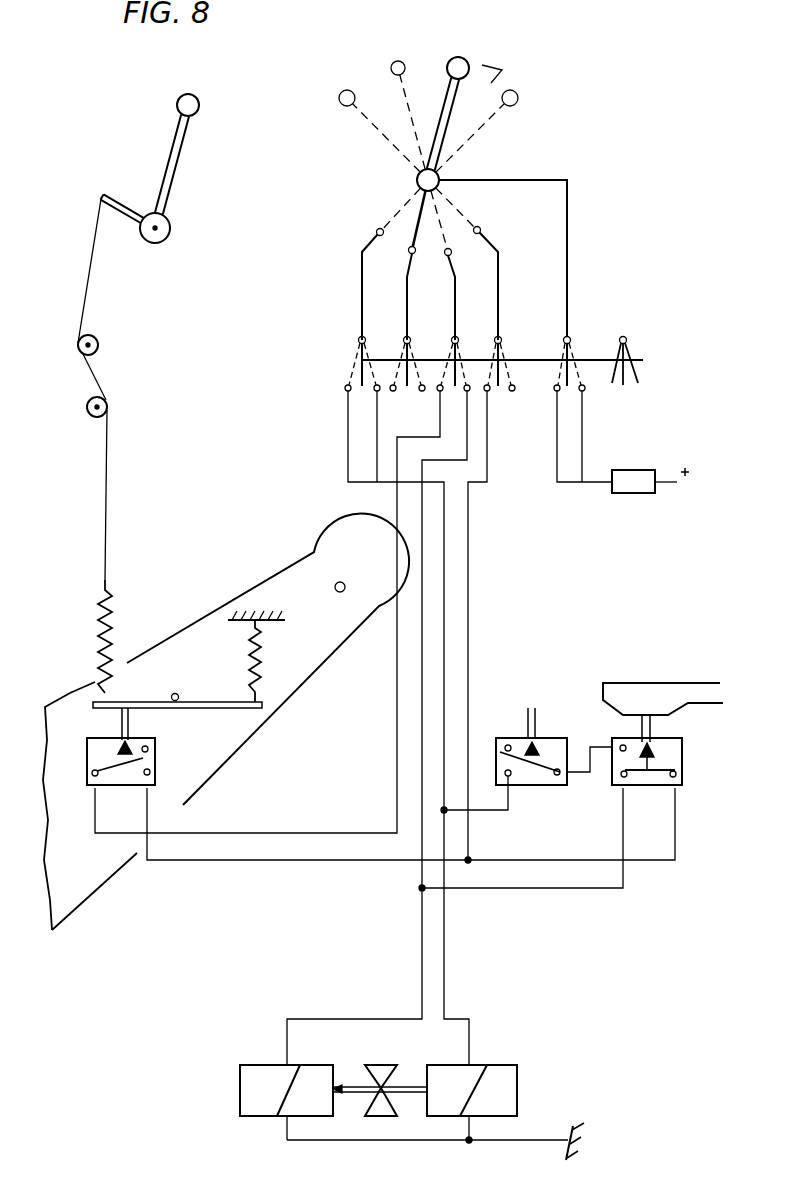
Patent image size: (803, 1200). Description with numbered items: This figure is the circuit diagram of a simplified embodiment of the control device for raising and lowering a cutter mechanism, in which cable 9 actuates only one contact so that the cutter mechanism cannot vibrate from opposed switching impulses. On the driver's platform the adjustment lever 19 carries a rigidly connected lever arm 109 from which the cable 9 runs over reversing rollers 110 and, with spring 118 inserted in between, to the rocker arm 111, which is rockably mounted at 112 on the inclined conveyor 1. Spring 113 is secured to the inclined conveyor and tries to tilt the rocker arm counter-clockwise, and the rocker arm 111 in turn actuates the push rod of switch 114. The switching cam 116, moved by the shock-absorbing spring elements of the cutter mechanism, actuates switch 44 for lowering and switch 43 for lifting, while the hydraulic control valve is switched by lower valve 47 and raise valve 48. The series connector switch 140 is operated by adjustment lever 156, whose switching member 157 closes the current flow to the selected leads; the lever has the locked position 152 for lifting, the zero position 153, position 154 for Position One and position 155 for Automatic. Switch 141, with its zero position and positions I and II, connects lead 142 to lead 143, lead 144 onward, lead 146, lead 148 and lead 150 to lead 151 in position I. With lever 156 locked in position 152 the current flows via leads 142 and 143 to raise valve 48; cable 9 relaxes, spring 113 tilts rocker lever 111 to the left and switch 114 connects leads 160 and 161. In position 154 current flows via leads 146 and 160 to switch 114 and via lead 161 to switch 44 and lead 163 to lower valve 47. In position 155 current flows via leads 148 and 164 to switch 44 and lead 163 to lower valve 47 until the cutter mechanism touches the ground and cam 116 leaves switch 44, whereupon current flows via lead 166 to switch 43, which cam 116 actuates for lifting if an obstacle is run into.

The inclined conveyor 1 is at (290, 583).
The cable 9 is at (92, 295).
The adjustment lever 19 is at (177, 152).
The switch for lifting 43 is at (515, 738).
The switch for lowering 44 is at (682, 748).
The lower valve 47 is at (240, 1075).
The raise valve 48 is at (518, 1082).
The lever arm 109 is at (105, 193).
The reversing rollers 110 is at (100, 347).
The rocker arm 111 is at (132, 700).
The rocker arm mounting 112 is at (203, 675).
The spring 113 is at (258, 657).
The switch 114 is at (90, 753).
The switching cam 116 is at (660, 690).
The spring 118 is at (112, 620).
The series connector switch 140 is at (438, 175).
The switch 141 is at (590, 356).
The lead 142 is at (362, 285).
The lead 143 is at (378, 437).
The lead 144 is at (407, 308).
The lead 146 is at (455, 310).
The lead 148 is at (500, 318).
The lead 150 is at (568, 268).
The lead 151 is at (658, 478).
The locked position for lifting 152 is at (519, 97).
The zero position 153 is at (456, 58).
The locked position for Position One 154 is at (393, 67).
The locked position for Automatic 155 is at (339, 92).
The adjustment lever 156 is at (455, 107).
The switching member 157 is at (420, 213).
The lead 160 is at (397, 512).
The lead 161 is at (302, 862).
The lead 163 is at (590, 888).
The lead 164 is at (468, 568).
The lead 166 is at (590, 747).